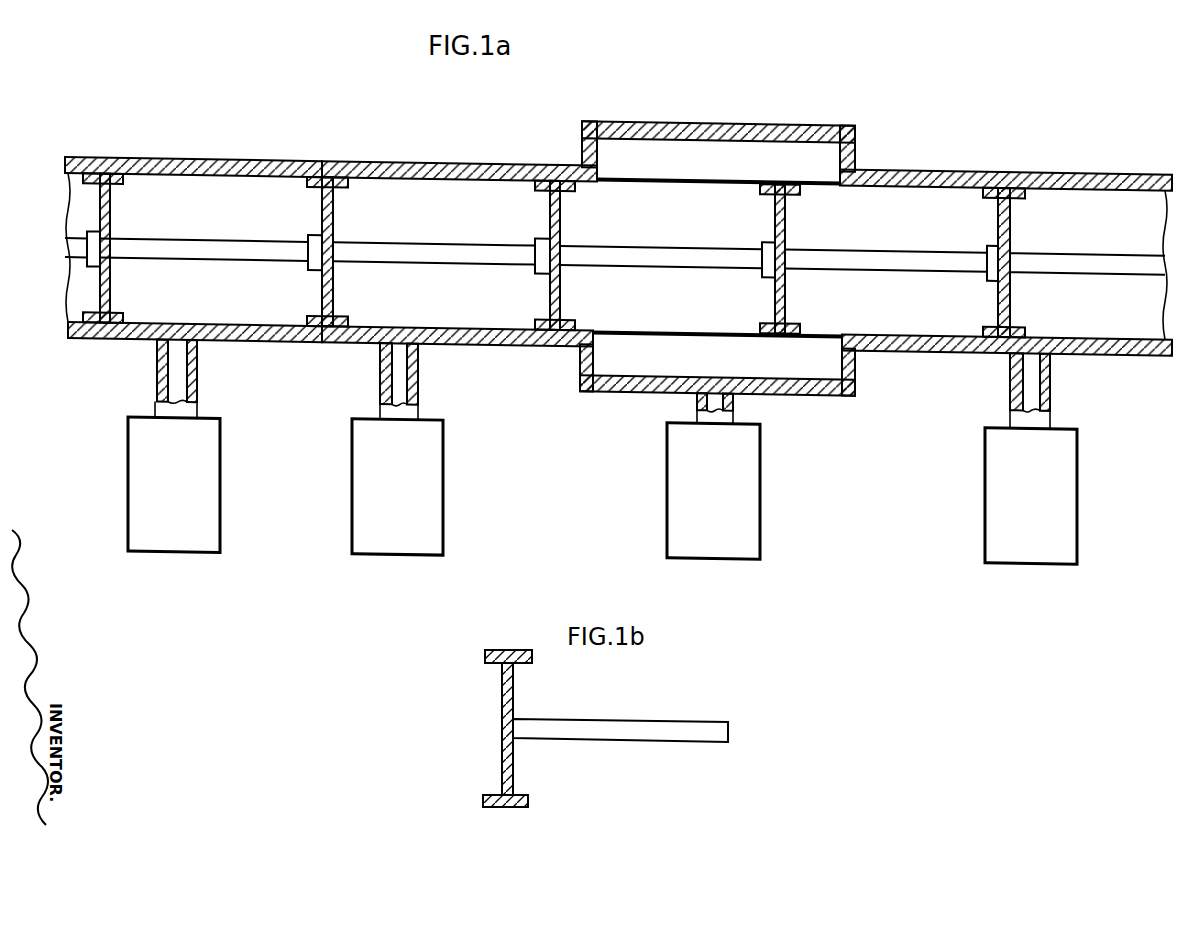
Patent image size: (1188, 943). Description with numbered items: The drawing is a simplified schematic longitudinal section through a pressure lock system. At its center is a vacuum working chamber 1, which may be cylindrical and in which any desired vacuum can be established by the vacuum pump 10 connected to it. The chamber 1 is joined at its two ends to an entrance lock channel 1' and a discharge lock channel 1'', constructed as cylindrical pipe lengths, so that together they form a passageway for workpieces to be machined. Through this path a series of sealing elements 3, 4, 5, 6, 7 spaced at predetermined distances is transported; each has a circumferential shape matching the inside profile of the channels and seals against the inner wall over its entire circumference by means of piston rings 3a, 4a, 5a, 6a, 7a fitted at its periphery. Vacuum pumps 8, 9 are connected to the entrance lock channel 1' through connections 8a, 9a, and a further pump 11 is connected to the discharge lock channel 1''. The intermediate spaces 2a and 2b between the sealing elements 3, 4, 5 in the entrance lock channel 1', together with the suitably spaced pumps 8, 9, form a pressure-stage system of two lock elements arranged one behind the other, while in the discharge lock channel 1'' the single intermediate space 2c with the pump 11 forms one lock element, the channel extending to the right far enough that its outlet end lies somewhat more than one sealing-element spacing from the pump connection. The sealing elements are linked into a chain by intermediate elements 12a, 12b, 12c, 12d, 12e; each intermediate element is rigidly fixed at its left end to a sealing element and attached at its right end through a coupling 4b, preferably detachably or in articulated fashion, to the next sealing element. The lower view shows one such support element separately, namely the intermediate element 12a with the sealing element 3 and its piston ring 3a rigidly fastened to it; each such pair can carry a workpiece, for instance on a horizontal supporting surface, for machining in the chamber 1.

In FIG. 1a, the vacuum working chamber 1 is at (717, 236).
In FIG. 1a, the entrance lock channel 1' is at (55, 213).
In FIG. 1a, the discharge lock channel 1'' is at (1152, 230).
In FIG. 1a, the intermediate space 2a is at (248, 184).
In FIG. 1a, the intermediate space 2b is at (447, 183).
In FIG. 1a, the intermediate space 2c is at (1105, 177).
In FIG. 1a, the sealing element 3 is at (110, 226).
In FIG. 1b, the sealing element 3 is at (500, 745).
In FIG. 1a, the piston ring 3a is at (108, 338).
In FIG. 1b, the piston ring 3a is at (536, 656).
In FIG. 1a, the sealing element 4 is at (334, 219).
In FIG. 1a, the piston ring 4a is at (318, 335).
In FIG. 1a, the coupling 4b is at (312, 243).
In FIG. 1a, the sealing element 5 is at (549, 203).
In FIG. 1a, the piston ring 5a is at (552, 336).
In FIG. 1a, the sealing element 6 is at (787, 224).
In FIG. 1a, the piston ring 6a is at (790, 327).
In FIG. 1a, the sealing element 7 is at (996, 200).
In FIG. 1a, the piston ring 7a is at (1000, 331).
In FIG. 1a, the vacuum pump 8 is at (180, 489).
In FIG. 1a, the connection 8a is at (198, 383).
In FIG. 1a, the vacuum pump 9 is at (403, 488).
In FIG. 1a, the connection 9a is at (420, 383).
In FIG. 1a, the vacuum pump 10 is at (724, 491).
In FIG. 1a, the pump 11 is at (1045, 493).
In FIG. 1a, the intermediate element 12a is at (178, 243).
In FIG. 1b, the intermediate element 12a is at (700, 725).
In FIG. 1a, the intermediate element 12b is at (486, 250).
In FIG. 1a, the intermediate element 12c is at (645, 248).
In FIG. 1a, the intermediate element 12d is at (872, 244).
In FIG. 1a, the intermediate element 12e is at (1036, 241).